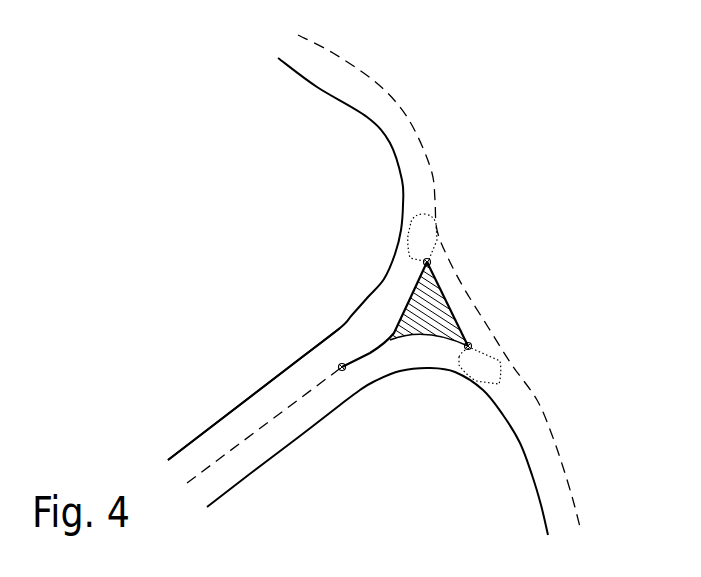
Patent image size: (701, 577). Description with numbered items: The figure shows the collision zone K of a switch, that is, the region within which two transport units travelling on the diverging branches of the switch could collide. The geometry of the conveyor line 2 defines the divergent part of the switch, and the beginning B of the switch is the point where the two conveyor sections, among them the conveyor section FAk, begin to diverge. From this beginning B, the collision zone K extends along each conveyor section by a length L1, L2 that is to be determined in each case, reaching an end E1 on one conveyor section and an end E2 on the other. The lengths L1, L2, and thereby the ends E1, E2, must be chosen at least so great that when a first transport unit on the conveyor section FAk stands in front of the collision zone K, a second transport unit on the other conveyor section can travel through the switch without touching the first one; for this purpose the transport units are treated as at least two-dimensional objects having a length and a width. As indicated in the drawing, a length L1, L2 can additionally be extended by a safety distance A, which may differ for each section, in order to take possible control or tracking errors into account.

The conveyor line 2 is at (565, 463).
The first conveyor section FAk is at (530, 468).
The first length L1 is at (422, 337).
The second length L2 is at (398, 315).
The collision zone K is at (432, 318).
The first end E1 is at (468, 346).
The second end E2 is at (427, 262).
The beginning of the switch B is at (339, 364).
The safety distance A is at (440, 313).